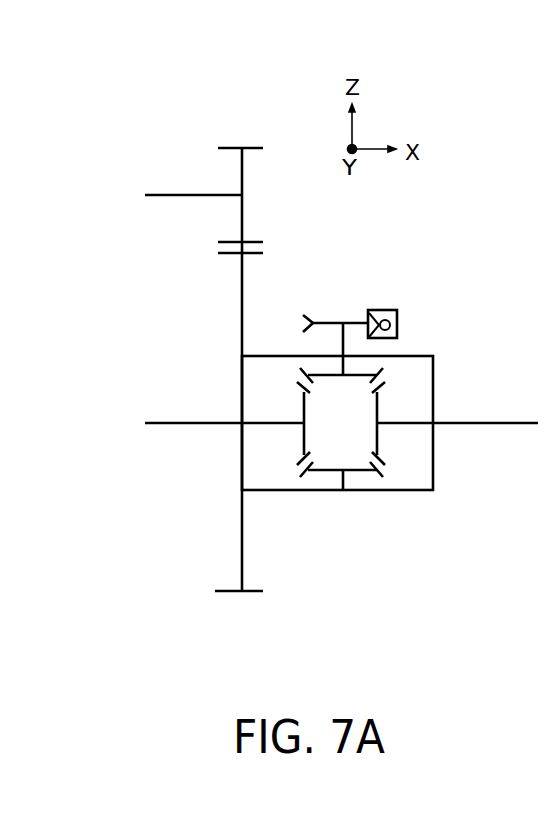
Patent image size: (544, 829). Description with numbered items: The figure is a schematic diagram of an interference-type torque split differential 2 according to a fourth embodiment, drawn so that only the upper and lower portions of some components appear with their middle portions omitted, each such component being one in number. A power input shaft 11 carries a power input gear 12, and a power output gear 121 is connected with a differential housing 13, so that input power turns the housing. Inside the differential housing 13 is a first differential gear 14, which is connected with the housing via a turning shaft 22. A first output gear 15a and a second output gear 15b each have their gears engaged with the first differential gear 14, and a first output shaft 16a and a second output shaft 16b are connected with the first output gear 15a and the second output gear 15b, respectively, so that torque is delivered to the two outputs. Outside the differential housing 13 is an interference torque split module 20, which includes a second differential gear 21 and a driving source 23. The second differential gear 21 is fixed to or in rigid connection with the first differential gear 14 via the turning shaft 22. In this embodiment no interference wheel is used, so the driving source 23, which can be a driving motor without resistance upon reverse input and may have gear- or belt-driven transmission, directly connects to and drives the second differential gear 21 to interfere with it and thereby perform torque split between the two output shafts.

The interference-type torque split differential 2 is at (156, 100).
The power input shaft 11 is at (188, 195).
The power input gear 12 is at (238, 173).
The power output gear 121 is at (240, 320).
The differential housing 13 is at (262, 355).
The first differential gear 14 is at (357, 376).
The first output gear 15a is at (381, 408).
The second output gear 15b is at (303, 405).
The first output shaft 16a is at (413, 424).
The second output shaft 16b is at (272, 424).
The interference torque split module 20 is at (398, 262).
The second differential gear 21 is at (352, 320).
The turning shaft 22 is at (344, 347).
The driving source 23 is at (383, 310).